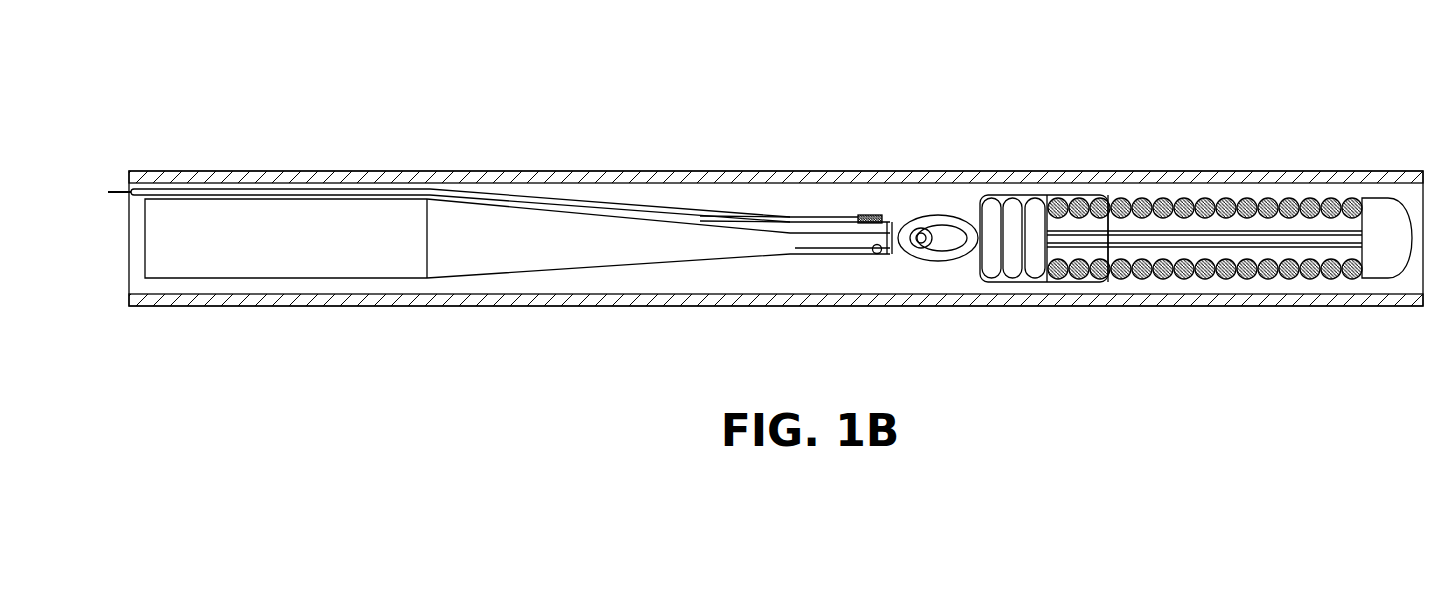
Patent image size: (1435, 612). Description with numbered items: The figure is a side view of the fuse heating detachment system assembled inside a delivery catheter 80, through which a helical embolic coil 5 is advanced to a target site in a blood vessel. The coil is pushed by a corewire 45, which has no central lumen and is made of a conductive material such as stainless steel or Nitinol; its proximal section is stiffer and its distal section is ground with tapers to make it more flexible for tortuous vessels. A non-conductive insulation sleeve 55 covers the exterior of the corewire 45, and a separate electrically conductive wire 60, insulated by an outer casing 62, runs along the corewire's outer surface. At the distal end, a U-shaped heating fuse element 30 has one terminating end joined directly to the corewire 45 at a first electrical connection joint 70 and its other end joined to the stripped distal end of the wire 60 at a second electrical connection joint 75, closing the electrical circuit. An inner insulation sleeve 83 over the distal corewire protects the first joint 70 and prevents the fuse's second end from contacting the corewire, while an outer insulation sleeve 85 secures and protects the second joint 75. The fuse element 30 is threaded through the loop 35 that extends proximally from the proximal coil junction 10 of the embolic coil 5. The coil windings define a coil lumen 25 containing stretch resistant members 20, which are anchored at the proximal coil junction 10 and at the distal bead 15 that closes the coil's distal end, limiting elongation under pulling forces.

The embolic coil 5 is at (1185, 281).
The proximal coil junction 10 is at (1072, 258).
The distal bead 15 is at (1378, 213).
The stretch resistant member 20 is at (1282, 250).
The coil lumen 25 is at (1187, 218).
The heating fuse element 30 is at (907, 226).
The loop 35 is at (948, 262).
The corewire 45 is at (308, 217).
The insulation sleeve 55 is at (468, 277).
The electrically conductive wire 60 is at (118, 192).
The outer casing 62 is at (208, 190).
The first electrical connection joint 70 is at (877, 253).
The second electrical connection joint 75 is at (875, 216).
The delivery catheter 80 is at (517, 176).
The inner insulation sleeve 83 is at (801, 250).
The outer insulation sleeve 85 is at (832, 217).